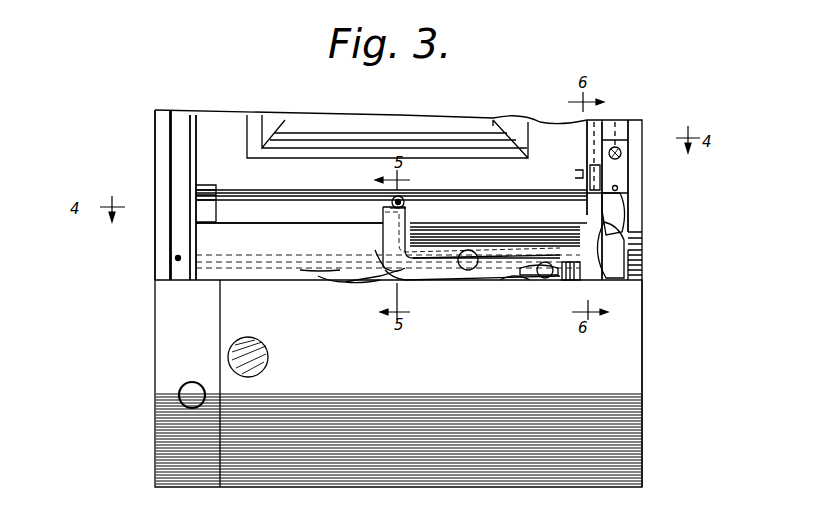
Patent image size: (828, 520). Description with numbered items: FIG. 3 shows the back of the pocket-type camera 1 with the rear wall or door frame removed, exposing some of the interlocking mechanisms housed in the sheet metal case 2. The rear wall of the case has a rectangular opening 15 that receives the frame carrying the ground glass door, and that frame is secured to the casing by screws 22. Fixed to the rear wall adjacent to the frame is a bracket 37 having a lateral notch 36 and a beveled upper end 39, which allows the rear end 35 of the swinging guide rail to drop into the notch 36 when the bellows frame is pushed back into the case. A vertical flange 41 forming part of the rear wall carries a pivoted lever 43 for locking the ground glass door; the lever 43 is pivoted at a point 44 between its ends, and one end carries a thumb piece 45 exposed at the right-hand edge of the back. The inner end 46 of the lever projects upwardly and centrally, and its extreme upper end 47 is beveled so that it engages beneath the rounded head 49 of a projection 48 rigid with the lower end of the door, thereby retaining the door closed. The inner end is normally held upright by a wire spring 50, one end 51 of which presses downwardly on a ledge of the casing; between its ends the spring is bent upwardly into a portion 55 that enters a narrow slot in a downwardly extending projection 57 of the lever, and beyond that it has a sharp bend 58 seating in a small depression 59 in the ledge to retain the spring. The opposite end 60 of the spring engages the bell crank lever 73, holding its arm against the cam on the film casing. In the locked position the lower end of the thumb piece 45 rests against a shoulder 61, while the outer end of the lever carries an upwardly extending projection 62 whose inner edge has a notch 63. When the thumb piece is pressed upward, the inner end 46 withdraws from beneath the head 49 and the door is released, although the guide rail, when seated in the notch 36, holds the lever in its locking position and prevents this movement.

The camera 1 is at (640, 393).
The sheet metal case 2 is at (640, 330).
The rectangular opening 15 is at (247, 253).
The screws 22 is at (620, 186).
The rear end of guide rail 35 is at (600, 176).
The lateral notch 36 is at (598, 173).
The bracket 37 is at (592, 157).
The upper end of bracket 39 is at (587, 147).
The vertical flange 41 is at (297, 230).
The pivoted lever 43 is at (430, 262).
The pivot point 44 is at (468, 252).
The thumb piece 45 is at (642, 272).
The inner end of lever 46 is at (407, 222).
The extreme upper end of lever 47 is at (406, 206).
The projection 48 is at (393, 200).
The rounded head 49 is at (404, 198).
The spring 50 is at (352, 275).
The end of spring 51 is at (318, 275).
The upwardly bent portion 55 is at (378, 250).
The downwardly extending projection 57 is at (410, 280).
The downwardly formed bend 58 is at (518, 288).
The small depression 59 is at (520, 283).
The end of spring 60 is at (545, 278).
The shoulder 61 is at (578, 174).
The upwardly extending projection 62 is at (608, 233).
The notch 63 is at (603, 225).
The bell crank lever 73 is at (572, 277).